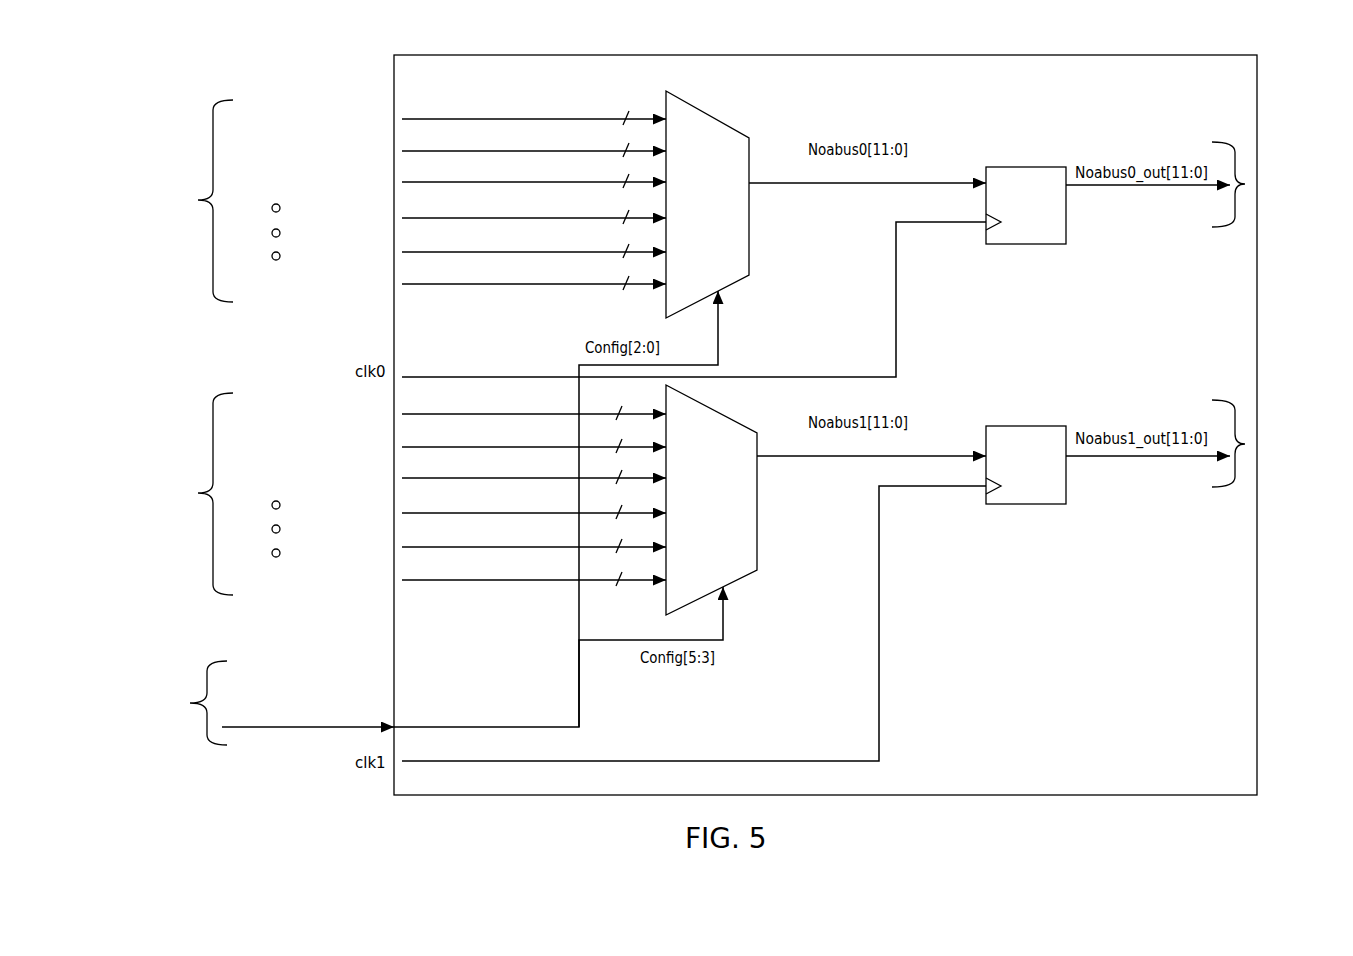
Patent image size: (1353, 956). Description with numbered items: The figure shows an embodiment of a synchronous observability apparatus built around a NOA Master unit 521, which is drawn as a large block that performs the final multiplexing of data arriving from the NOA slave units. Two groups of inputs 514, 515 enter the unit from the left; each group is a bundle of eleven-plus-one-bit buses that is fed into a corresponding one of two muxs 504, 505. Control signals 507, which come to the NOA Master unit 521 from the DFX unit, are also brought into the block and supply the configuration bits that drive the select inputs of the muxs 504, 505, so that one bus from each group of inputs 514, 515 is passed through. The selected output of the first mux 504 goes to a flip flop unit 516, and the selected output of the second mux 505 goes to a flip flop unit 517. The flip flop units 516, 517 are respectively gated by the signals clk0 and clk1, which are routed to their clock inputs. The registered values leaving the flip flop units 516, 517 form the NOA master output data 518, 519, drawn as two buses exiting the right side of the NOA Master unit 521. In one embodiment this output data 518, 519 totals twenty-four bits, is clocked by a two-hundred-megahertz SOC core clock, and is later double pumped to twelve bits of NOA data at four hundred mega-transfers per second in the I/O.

The mux 504 is at (750, 212).
The mux 505 is at (757, 510).
The control signals 507 is at (263, 703).
The inputs 514 is at (399, 199).
The inputs 515 is at (399, 493).
The flip flop unit 516 is at (1066, 225).
The flip flop unit 517 is at (1066, 485).
The NOA master output data 518 is at (1245, 184).
The NOA master output data 519 is at (1245, 444).
The NOA Master unit 521 is at (1115, 93).